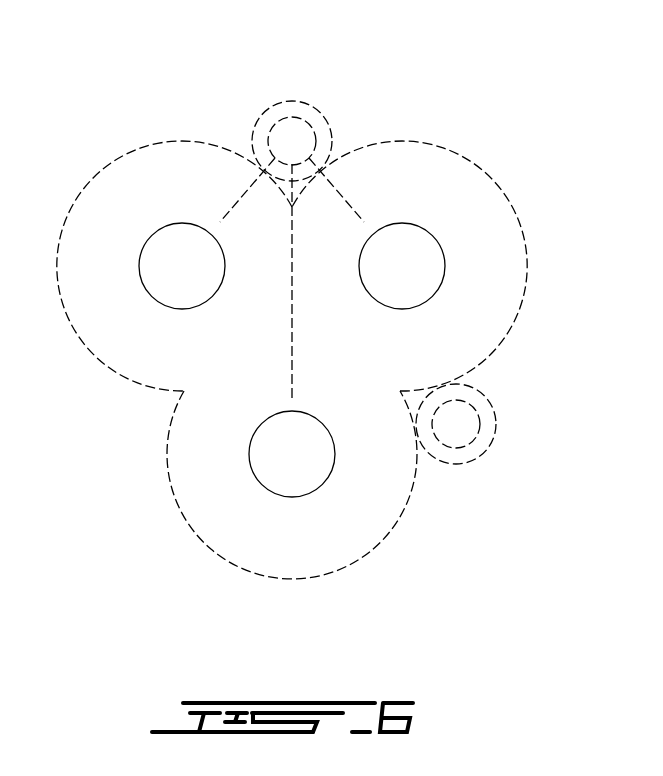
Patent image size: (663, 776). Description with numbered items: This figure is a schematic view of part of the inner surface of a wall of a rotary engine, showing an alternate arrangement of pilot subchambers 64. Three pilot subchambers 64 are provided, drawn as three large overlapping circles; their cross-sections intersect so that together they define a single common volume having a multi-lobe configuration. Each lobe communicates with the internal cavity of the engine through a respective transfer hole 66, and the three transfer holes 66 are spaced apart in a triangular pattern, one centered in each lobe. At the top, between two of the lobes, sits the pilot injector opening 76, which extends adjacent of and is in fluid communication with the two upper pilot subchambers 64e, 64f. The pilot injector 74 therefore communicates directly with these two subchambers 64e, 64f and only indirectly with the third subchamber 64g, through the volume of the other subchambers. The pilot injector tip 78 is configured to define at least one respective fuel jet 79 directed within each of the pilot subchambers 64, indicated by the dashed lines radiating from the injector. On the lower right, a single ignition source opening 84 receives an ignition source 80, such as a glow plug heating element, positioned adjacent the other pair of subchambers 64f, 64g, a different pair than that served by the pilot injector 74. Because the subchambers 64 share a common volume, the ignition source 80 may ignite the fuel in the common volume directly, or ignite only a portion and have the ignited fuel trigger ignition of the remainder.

The pilot subchambers 64 is at (322, 325).
The pilot subchamber 64e is at (127, 150).
The pilot subchamber 64f is at (480, 167).
The pilot subchamber 64g is at (383, 541).
The transfer hole 66 is at (447, 268).
The pilot injector 74 is at (296, 105).
The pilot injector opening 76 is at (315, 107).
The pilot injector tip 78 is at (280, 120).
The fuel jet 79 is at (243, 200).
The ignition source 80 is at (458, 432).
The ignition source opening 84 is at (496, 418).